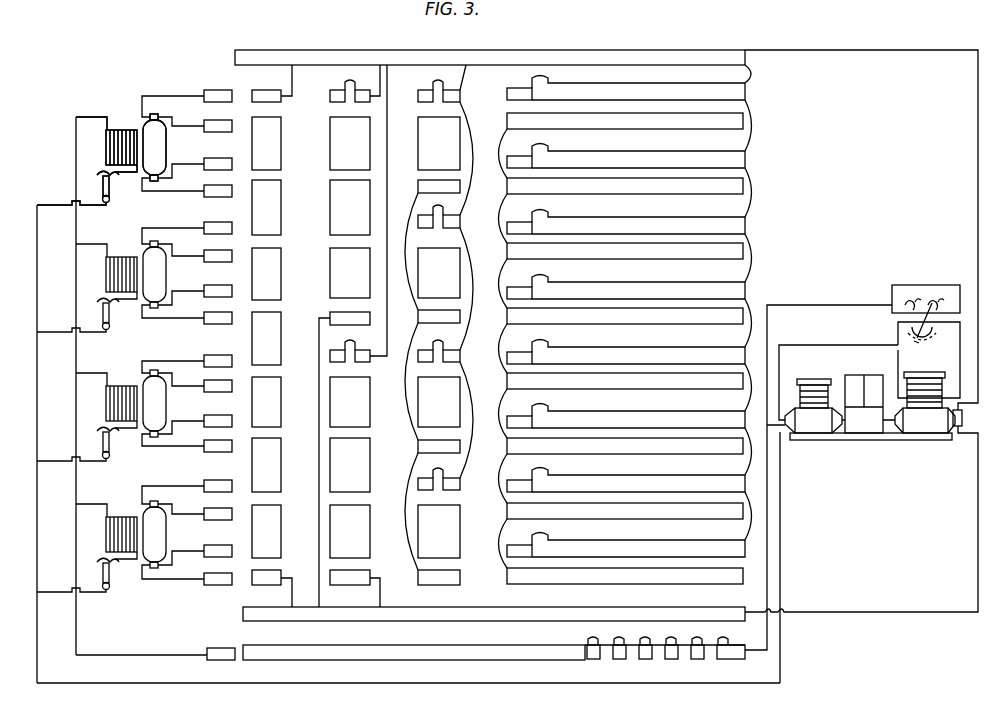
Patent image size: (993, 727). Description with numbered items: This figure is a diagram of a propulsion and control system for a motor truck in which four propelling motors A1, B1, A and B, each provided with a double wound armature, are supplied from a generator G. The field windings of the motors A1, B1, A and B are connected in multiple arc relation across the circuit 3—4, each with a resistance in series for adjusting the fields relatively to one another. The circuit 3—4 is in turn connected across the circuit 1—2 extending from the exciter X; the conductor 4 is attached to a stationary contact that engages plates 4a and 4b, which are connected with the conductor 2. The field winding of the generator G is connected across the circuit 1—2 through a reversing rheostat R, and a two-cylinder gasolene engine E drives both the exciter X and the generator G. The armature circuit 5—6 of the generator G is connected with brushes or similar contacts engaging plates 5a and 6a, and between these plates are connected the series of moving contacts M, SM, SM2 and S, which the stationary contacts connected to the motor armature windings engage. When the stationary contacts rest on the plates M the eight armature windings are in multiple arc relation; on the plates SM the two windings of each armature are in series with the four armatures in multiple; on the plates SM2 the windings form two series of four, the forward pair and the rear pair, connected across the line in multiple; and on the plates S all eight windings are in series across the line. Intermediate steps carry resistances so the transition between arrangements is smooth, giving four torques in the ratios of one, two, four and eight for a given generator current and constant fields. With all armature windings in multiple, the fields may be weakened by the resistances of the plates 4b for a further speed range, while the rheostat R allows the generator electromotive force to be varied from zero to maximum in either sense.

The conductor of circuit 1—2 1 is at (838, 514).
The conductor of circuit 1— 2 is at (818, 477).
The conductor of circuit 3—4 3 is at (408, 676).
The conductor of circuit 3— 4 is at (155, 648).
The plate 4a is at (414, 643).
The plates with resistances 4b is at (665, 643).
The conductor of armature circuit 5—6 5 is at (861, 230).
The plate 5a is at (493, 45).
The conductor of armature circuit 5— 6 is at (861, 519).
The plate 6a is at (494, 606).
The propelling motor A1 is at (134, 147).
The propelling motor B1 is at (134, 277).
The propelling motor A is at (134, 408).
The propelling motor B is at (134, 536).
The plates S (moving contacts) S is at (272, 336).
The plates S M² (moving contacts) SM2 is at (353, 336).
The plates S M (moving contacts) SM is at (439, 325).
The plates M (moving contacts) M is at (625, 324).
The reversing rheostat R is at (926, 329).
The exciter X is at (815, 422).
The two-cylinder gasolene engine E is at (870, 419).
The generator G is at (928, 418).